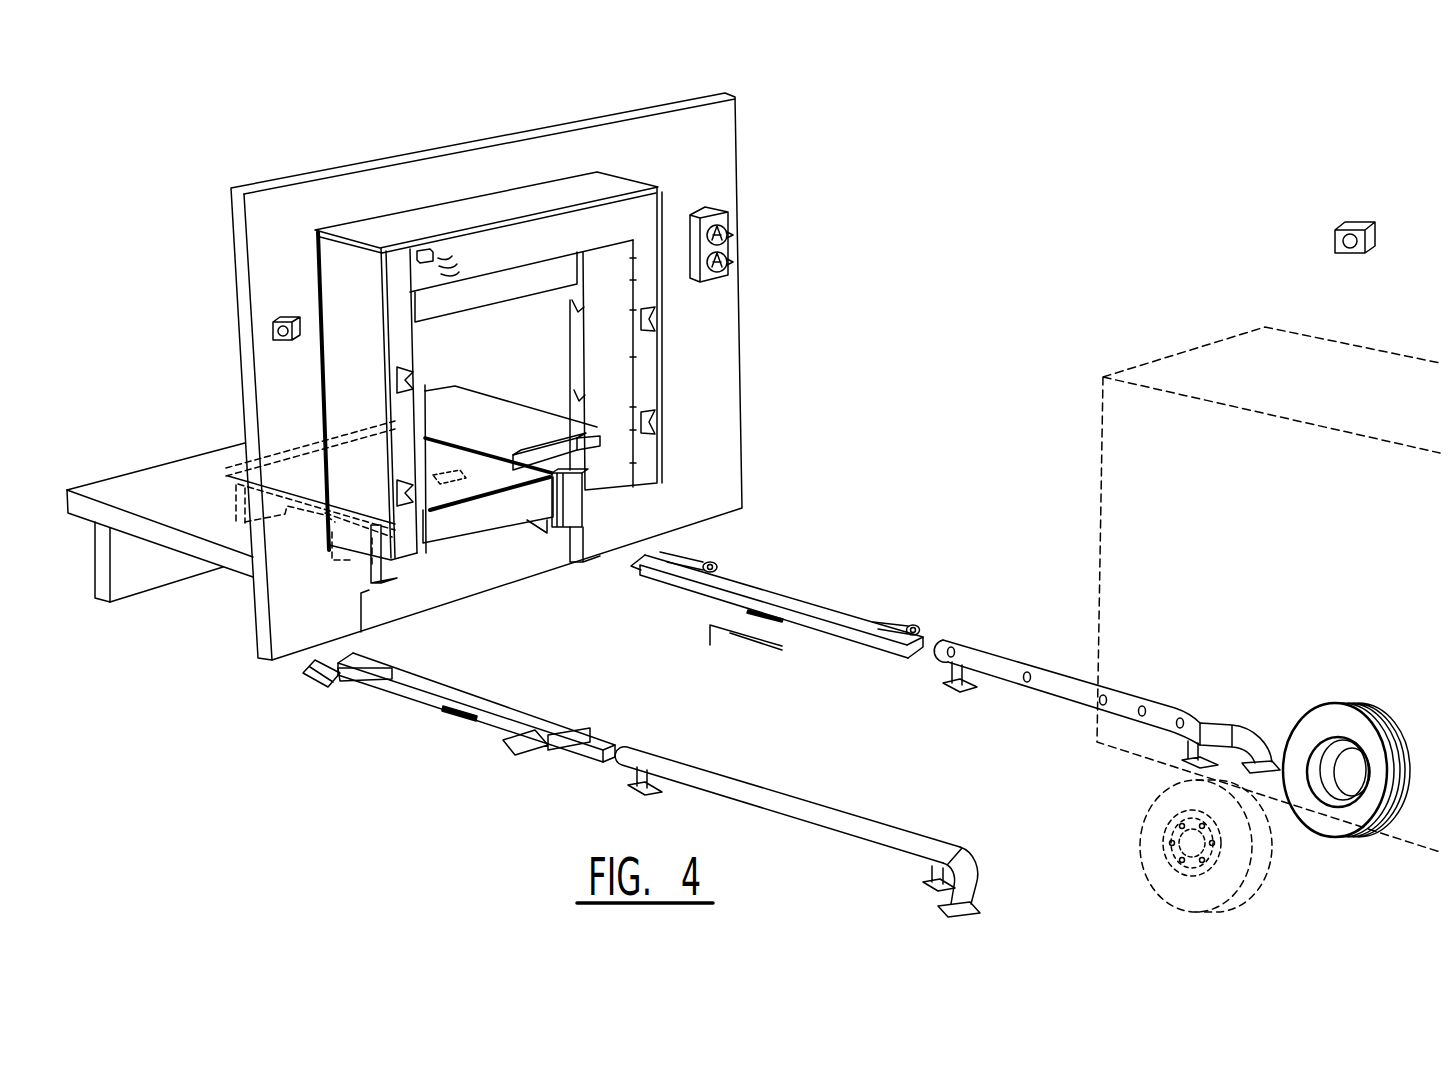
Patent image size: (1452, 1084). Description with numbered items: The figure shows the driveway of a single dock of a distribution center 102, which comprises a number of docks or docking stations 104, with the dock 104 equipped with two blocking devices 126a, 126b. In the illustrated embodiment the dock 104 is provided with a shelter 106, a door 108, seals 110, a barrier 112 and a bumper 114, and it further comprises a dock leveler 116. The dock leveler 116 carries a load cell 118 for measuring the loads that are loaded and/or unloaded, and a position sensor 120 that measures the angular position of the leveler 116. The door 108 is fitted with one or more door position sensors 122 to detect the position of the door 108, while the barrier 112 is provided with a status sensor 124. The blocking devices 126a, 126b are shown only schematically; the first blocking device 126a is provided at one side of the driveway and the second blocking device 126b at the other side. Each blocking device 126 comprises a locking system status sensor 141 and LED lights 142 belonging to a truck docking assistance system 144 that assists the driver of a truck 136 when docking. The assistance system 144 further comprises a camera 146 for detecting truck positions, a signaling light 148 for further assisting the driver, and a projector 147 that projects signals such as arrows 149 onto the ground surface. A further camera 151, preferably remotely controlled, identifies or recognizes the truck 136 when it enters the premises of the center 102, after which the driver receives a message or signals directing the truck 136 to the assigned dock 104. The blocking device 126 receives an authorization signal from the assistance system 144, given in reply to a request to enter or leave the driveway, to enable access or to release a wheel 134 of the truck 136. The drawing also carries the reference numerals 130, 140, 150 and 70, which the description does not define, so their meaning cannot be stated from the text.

The distribution center 102 is at (281, 135).
The dock 104 is at (498, 583).
The shelter 106 is at (746, 323).
The door 108 is at (497, 290).
The seals 110 is at (612, 272).
The barrier 112 is at (550, 445).
The bumper 114 is at (586, 497).
The dock leveler 116 is at (481, 430).
The load cell 118 is at (456, 470).
The position sensor 120 is at (228, 470).
The door position sensor 122 is at (403, 342).
The status sensor 124 is at (587, 423).
The blocking device 126 is at (934, 501).
The first blocking device 126a is at (856, 562).
The second blocking device 126b is at (397, 752).
The coupling 130 is at (741, 539).
The wheel 134 is at (1347, 832).
The truck 136 is at (1256, 353).
The rail bar 140 is at (812, 622).
The locking system status sensor 141 is at (718, 560).
The LED lights 142 is at (1067, 685).
The truck docking assistance system 144 is at (583, 394).
The camera 146 is at (272, 330).
The projector 147 is at (431, 250).
The signaling light 148 is at (728, 248).
The arrows 149 is at (747, 643).
The upper clip 150 is at (632, 328).
The camera 151 is at (1358, 223).
The trailer frame rail 70 is at (1014, 660).